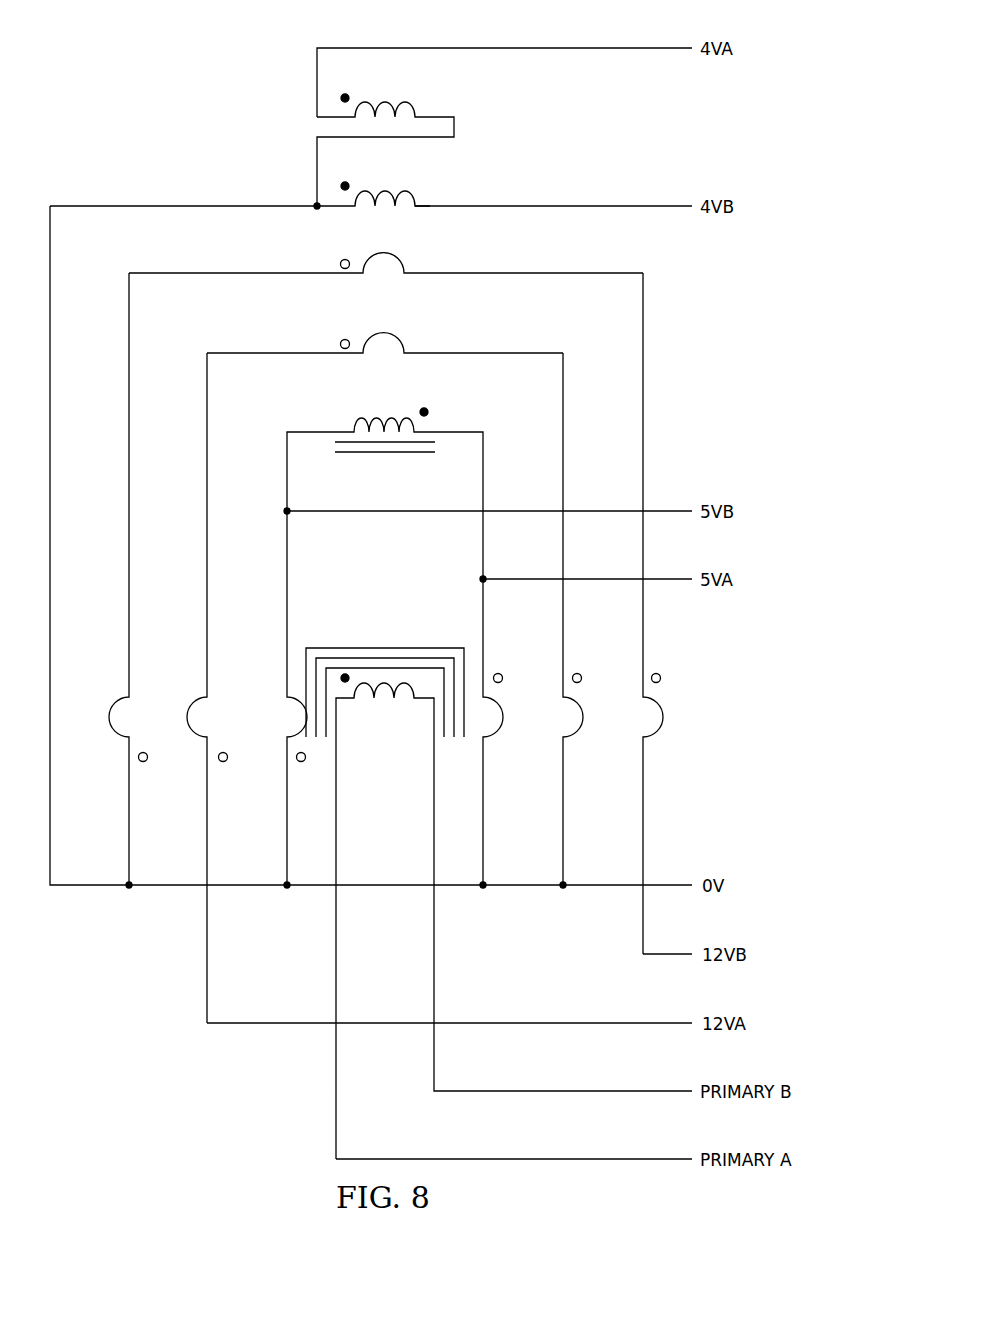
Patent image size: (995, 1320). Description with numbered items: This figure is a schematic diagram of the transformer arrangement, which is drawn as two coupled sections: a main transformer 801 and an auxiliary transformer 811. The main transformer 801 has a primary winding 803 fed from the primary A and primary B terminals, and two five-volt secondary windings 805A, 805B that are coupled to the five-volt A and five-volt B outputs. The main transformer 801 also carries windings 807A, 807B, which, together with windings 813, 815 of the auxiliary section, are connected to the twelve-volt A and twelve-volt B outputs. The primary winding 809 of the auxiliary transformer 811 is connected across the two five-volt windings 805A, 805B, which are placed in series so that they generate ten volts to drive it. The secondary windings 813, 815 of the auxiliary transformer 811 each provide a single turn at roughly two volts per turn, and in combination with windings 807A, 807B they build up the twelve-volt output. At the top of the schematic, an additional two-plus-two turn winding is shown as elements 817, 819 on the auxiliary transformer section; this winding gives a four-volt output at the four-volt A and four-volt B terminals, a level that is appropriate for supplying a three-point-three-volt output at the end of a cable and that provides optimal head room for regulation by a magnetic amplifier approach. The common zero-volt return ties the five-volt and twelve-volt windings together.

The main transformer 801 is at (378, 696).
The primary winding 803 is at (393, 700).
The 5V secondary winding 805A is at (502, 738).
The 5V secondary winding 805B is at (277, 737).
The 12V secondary winding 807A is at (197, 737).
The 12V secondary winding 807B is at (662, 738).
The primary winding of auxiliary transformer 809 is at (393, 418).
The auxiliary transformer 811 is at (278, 131).
The secondary winding 813 is at (404, 345).
The secondary winding 815 is at (404, 265).
The additional 2+2 turn winding 817 is at (392, 190).
The additional 2+2 turn winding 819 is at (392, 101).